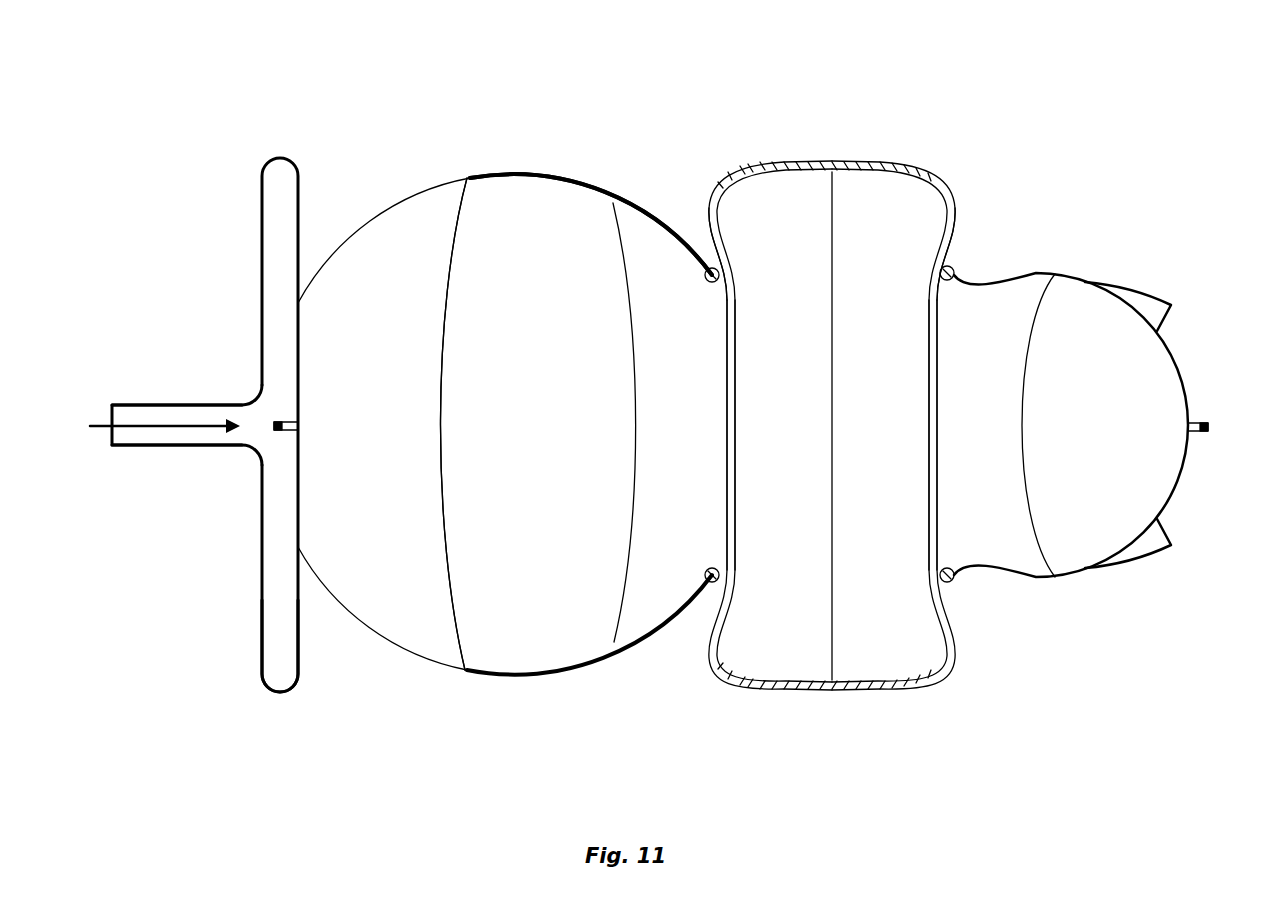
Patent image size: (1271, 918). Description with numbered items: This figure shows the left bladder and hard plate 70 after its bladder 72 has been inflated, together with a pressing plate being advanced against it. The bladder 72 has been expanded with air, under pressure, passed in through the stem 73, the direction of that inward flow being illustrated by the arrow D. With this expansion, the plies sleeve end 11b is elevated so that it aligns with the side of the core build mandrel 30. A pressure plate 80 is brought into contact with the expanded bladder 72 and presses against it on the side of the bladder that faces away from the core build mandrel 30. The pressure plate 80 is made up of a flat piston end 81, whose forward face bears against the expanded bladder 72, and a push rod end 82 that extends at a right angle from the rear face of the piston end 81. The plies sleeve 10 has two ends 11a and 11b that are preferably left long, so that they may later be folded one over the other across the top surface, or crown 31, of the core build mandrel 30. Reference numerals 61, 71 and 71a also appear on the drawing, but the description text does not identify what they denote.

The plies sleeve 10 is at (507, 680).
The plies sleeve end 11a is at (1162, 548).
The plies sleeve end 11b is at (470, 178).
The core build mandrel 30 is at (832, 425).
The crown 31 is at (878, 162).
The ring 61 is at (956, 270).
The hard plate 70 is at (549, 114).
The sleeve wall 71 is at (730, 425).
The sleeve flared end 71a is at (946, 225).
The bladder 72 is at (769, 424).
The stem 73 is at (284, 422).
The pressure plate 80 is at (316, 234).
The piston end 81 is at (293, 650).
The push rod end 82 is at (214, 447).
The arrow D is at (180, 426).